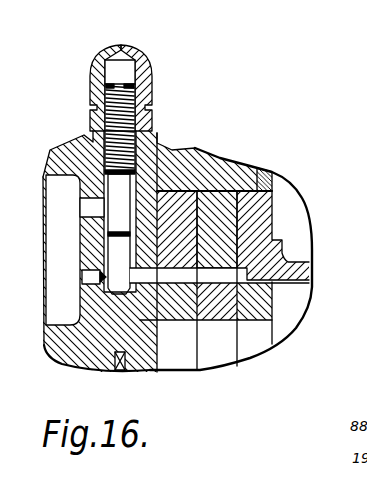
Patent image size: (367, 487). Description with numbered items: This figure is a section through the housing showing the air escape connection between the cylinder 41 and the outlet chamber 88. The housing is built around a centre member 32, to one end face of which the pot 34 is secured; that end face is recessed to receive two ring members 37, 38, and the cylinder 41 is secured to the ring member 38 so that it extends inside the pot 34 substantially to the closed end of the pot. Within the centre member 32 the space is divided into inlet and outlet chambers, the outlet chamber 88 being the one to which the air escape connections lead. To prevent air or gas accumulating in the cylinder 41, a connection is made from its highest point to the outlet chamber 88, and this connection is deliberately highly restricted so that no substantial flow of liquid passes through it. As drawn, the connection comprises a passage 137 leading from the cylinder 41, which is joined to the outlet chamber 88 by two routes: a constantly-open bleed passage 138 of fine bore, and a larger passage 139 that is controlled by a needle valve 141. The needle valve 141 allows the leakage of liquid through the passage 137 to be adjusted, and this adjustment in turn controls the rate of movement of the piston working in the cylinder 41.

The centre member 32 is at (179, 208).
The pot 34 is at (281, 182).
The ring member 37 is at (222, 210).
The ring member 38 is at (261, 176).
The cylinder 41 is at (302, 270).
The outlet chamber 88 is at (63, 313).
The passage 137 is at (233, 356).
The bleed passage 138 is at (98, 270).
The larger passage 139 is at (88, 214).
The needle valve 141 is at (94, 148).